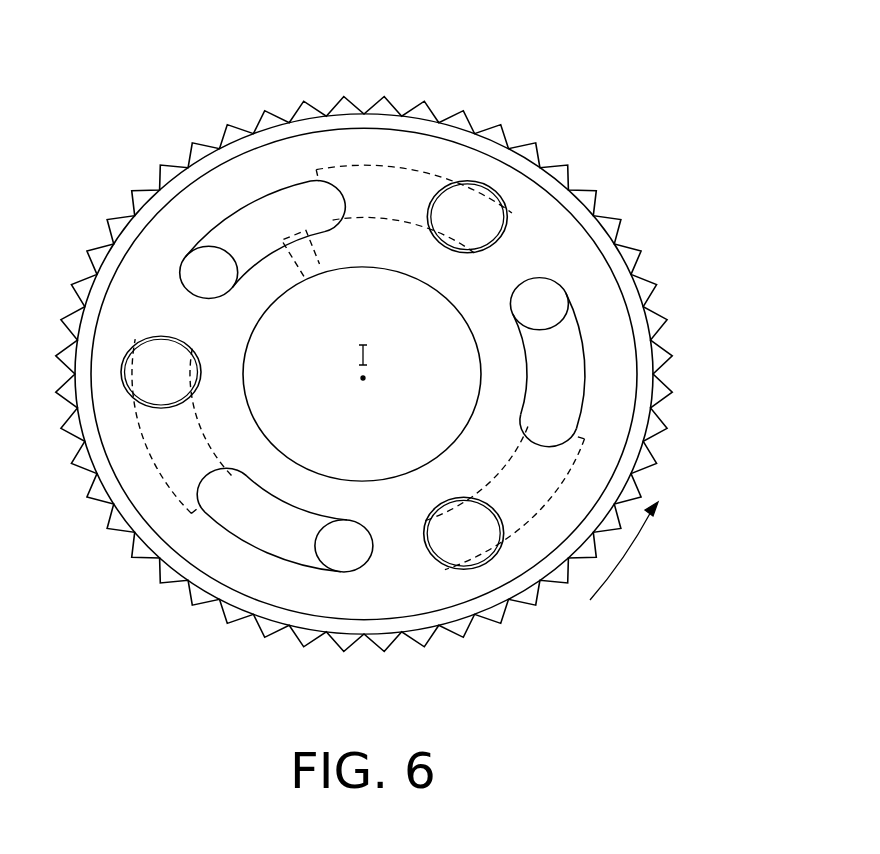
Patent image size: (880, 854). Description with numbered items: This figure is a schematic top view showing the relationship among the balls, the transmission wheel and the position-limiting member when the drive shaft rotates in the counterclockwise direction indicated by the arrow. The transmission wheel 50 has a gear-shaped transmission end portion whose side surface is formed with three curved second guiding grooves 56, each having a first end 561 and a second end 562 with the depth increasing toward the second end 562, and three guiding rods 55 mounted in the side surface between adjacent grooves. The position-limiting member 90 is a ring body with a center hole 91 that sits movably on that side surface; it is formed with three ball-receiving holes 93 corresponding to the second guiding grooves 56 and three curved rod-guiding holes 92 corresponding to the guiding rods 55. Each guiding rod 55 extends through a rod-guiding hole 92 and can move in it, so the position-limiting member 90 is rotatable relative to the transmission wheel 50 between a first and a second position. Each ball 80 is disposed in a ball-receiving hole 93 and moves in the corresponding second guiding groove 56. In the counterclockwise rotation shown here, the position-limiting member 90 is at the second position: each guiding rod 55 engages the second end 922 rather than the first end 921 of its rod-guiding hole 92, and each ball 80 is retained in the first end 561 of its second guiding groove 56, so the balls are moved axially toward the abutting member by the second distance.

The transmission wheel 50 is at (440, 95).
The guiding rod 55 is at (193, 260).
The second guiding groove 56 is at (395, 163).
The first end of second guiding groove 561 is at (510, 212).
The second end of second guiding groove 562 is at (313, 165).
The ball 80 is at (483, 194).
The position-limiting member 90 is at (655, 366).
The center hole 91 is at (452, 311).
The rod-guiding hole 92 is at (246, 204).
The first end of rod-guiding hole 921 is at (548, 427).
The second end of rod-guiding hole 922 is at (531, 282).
The ball-receiving hole 93 is at (490, 217).